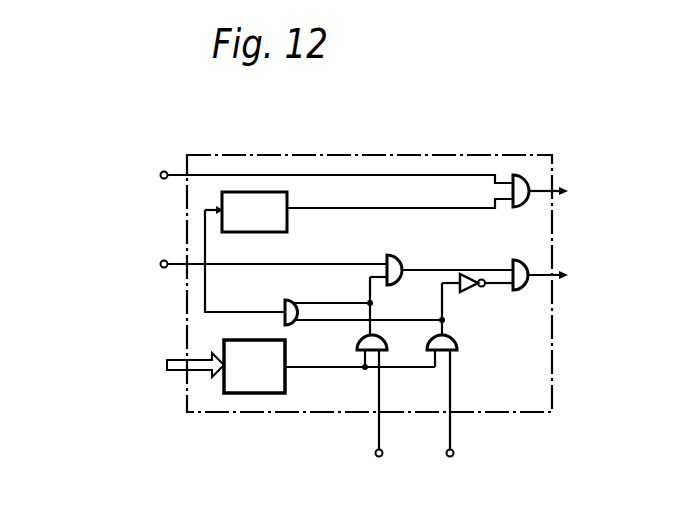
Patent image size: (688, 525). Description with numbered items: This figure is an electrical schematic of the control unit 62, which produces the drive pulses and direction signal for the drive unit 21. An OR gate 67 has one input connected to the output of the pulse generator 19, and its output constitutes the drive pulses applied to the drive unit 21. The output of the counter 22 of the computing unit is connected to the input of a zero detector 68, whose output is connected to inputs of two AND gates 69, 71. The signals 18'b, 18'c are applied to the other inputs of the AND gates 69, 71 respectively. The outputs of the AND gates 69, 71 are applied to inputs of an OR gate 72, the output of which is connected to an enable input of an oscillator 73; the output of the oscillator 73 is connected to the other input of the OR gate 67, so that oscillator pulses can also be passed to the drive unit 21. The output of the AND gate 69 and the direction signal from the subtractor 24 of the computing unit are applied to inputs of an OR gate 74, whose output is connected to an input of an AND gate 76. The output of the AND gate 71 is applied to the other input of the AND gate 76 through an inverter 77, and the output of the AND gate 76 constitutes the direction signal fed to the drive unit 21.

The control unit 62 is at (373, 154).
The OR gate 67 is at (521, 175).
The oscillator 73 is at (289, 194).
The OR gate 74 is at (394, 256).
The inverter 77 is at (467, 272).
The AND gate 76 is at (519, 260).
The OR gate 72 is at (290, 299).
The AND gate 69 is at (358, 341).
The AND gate 71 is at (457, 340).
The zero detector 68 is at (247, 394).
The pulse generator 19 is at (270, 173).
The subtractor 24 is at (207, 279).
The counter 22 is at (127, 377).
The drive unit 21 is at (617, 233).
The signal 18'b is at (385, 416).
The signal 18'c is at (460, 416).